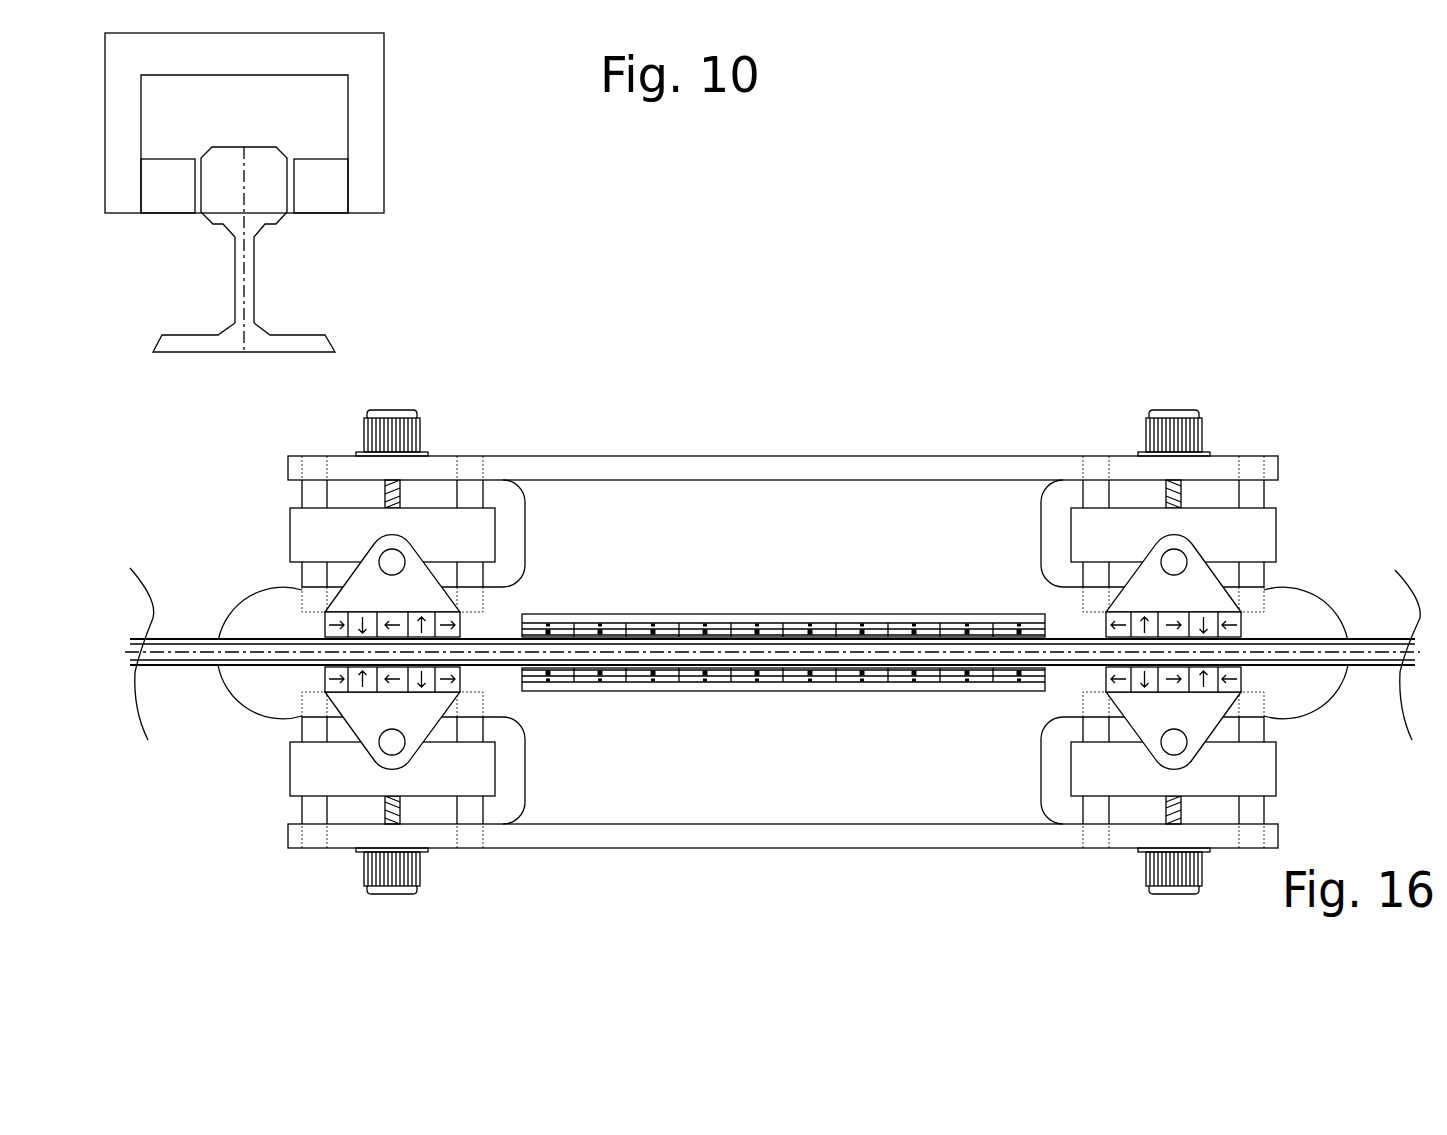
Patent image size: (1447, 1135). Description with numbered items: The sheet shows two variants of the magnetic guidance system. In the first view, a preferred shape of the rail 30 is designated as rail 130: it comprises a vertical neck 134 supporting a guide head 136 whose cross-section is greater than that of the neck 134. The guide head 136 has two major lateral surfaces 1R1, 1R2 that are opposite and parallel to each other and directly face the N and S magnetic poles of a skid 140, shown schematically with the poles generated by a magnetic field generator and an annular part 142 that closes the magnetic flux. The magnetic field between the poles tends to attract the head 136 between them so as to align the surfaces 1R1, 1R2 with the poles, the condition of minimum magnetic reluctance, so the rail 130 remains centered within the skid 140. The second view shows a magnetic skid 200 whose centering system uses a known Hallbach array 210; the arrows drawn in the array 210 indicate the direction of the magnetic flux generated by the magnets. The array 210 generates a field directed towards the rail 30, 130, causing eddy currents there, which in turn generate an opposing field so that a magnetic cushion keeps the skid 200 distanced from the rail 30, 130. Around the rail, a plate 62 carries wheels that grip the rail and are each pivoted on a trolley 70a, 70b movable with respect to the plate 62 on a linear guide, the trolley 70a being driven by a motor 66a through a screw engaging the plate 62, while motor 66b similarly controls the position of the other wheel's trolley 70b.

In FIG. 10, the rail 130 is at (312, 218).
In FIG. 16, the rail 130 is at (266, 624).
In FIG. 10, the vertical neck 134 is at (255, 270).
In FIG. 10, the guide head 136 is at (228, 147).
In FIG. 10, the skid 140 is at (311, 123).
In FIG. 10, the annular part 142 is at (384, 110).
In FIG. 10, the major lateral surface 1R1 is at (300, 206).
In FIG. 10, the major lateral surface 1R2 is at (190, 202).
In FIG. 16, the magnetic skid 200 is at (772, 594).
In FIG. 16, the rail 30 is at (772, 639).
In FIG. 16, the plate 62 is at (823, 456).
In FIG. 16, the motor 66a is at (388, 410).
In FIG. 16, the motor 66b is at (383, 890).
In FIG. 16, the trolley 70a is at (302, 532).
In FIG. 16, the trolley 70b is at (483, 780).
In FIG. 16, the Hallbach array 210 is at (475, 617).